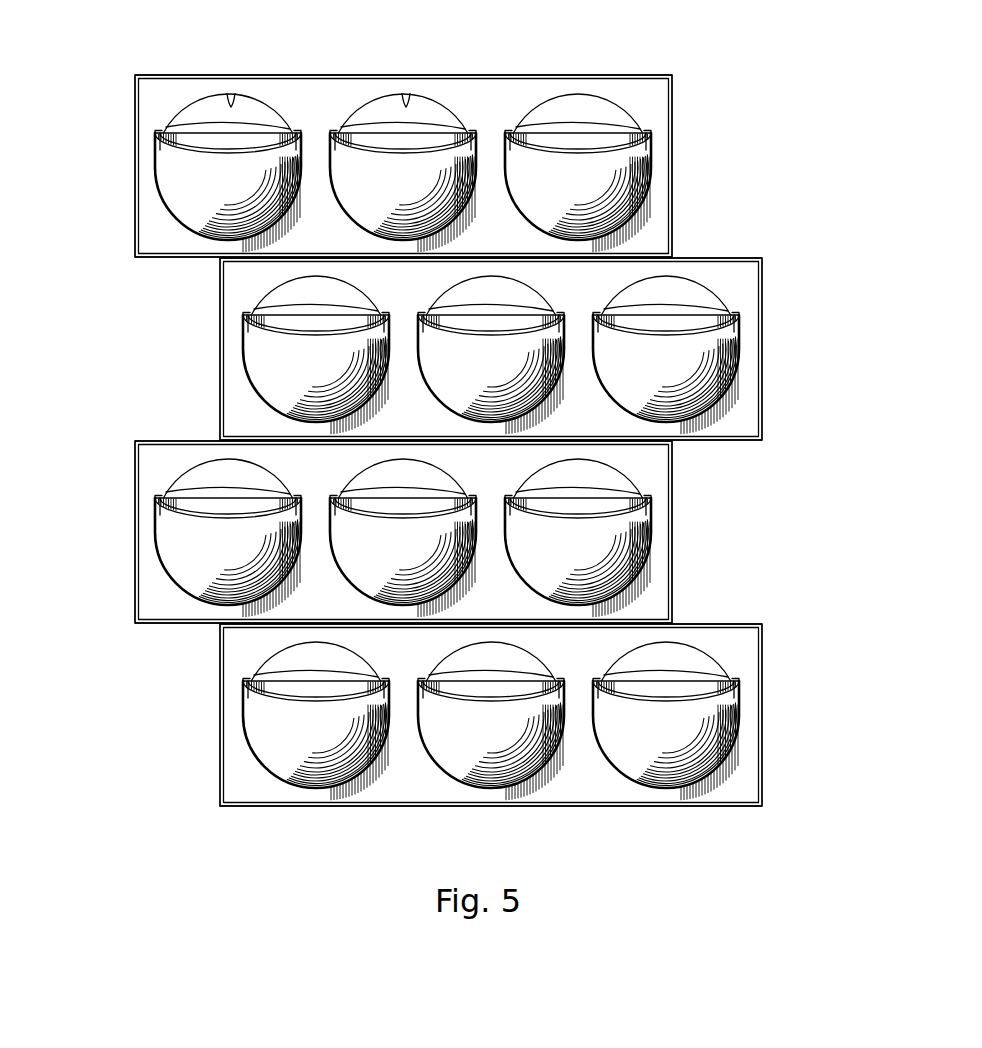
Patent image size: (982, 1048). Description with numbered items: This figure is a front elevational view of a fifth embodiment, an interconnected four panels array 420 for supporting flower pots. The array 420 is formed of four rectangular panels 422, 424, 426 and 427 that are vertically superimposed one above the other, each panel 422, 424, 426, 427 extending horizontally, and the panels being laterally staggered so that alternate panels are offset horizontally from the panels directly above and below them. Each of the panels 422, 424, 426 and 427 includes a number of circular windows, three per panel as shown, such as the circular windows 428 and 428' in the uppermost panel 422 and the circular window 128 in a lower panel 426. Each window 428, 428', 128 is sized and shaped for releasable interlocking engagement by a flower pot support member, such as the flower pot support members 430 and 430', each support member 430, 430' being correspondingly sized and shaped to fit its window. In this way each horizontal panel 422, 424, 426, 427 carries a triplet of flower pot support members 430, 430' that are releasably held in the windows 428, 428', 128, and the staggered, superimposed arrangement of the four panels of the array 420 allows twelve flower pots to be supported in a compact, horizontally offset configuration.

The interconnected four panels array 420 is at (219, 352).
The panel 422 is at (150, 247).
The panel 424 is at (245, 418).
The panel 426 is at (157, 605).
The panel 427 is at (237, 787).
The circular window 428 is at (274, 54).
The circular window 428' is at (453, 54).
The flower pot support member 430 is at (173, 173).
The flower pot support member 430' is at (668, 172).
The circular window 128 is at (257, 521).